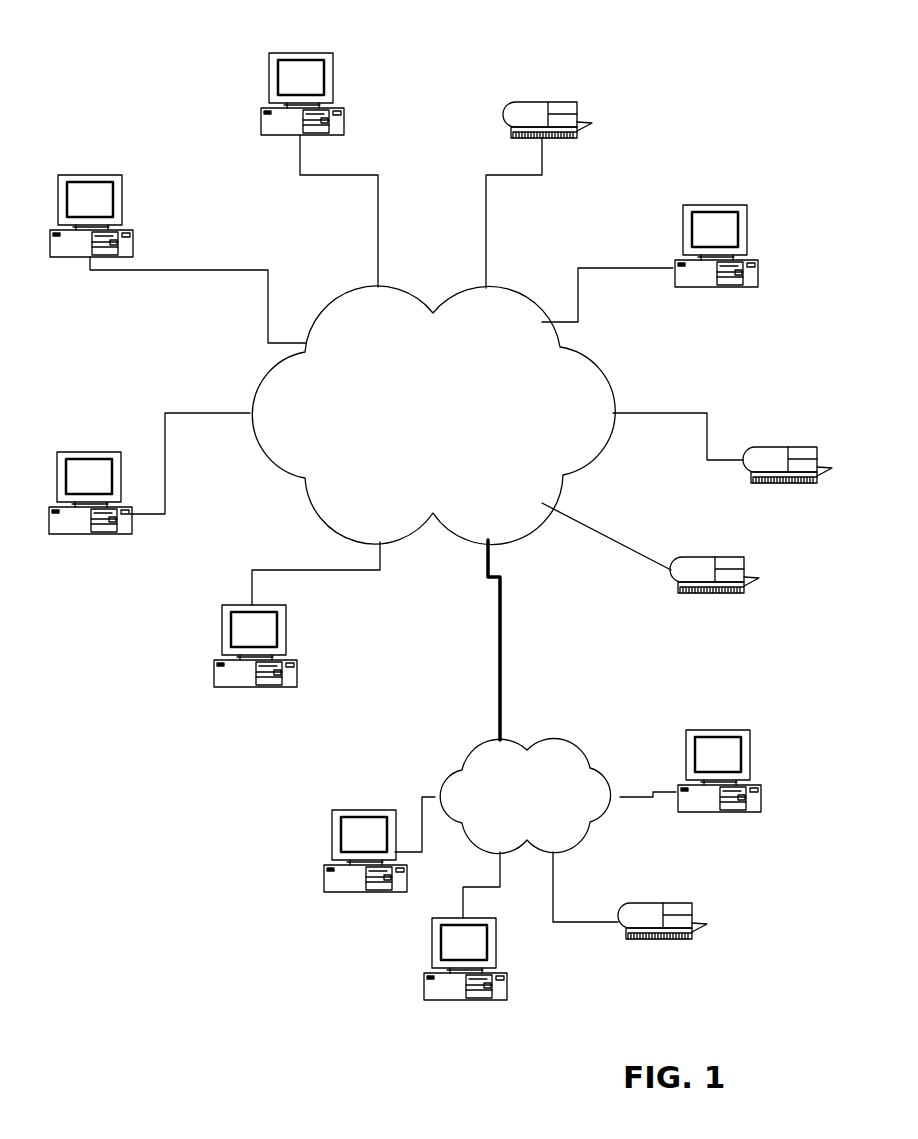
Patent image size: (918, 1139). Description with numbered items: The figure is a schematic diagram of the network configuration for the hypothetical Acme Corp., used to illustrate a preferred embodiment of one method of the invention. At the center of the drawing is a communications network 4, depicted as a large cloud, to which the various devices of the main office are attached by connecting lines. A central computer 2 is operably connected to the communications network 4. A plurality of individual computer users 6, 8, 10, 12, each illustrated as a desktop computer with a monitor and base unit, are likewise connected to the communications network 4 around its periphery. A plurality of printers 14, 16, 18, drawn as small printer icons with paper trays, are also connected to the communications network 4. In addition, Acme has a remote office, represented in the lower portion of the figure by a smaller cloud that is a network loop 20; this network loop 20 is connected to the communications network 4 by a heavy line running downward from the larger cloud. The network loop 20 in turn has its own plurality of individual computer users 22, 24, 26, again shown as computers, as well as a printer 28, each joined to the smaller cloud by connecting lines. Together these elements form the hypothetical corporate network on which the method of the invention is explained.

The central computer 2 is at (90, 175).
The communications network 4 is at (332, 302).
The individual computer user 6 is at (272, 53).
The individual computer user 8 is at (715, 205).
The individual computer user 10 is at (252, 688).
The individual computer user 12 is at (93, 452).
The printer 14 is at (558, 102).
The printer 16 is at (782, 447).
The printer 18 is at (725, 593).
The network loop 20 is at (555, 740).
The individual computer user 22 is at (750, 750).
The individual computer user 24 is at (424, 980).
The individual computer user 26 is at (323, 872).
The printer 28 is at (692, 915).